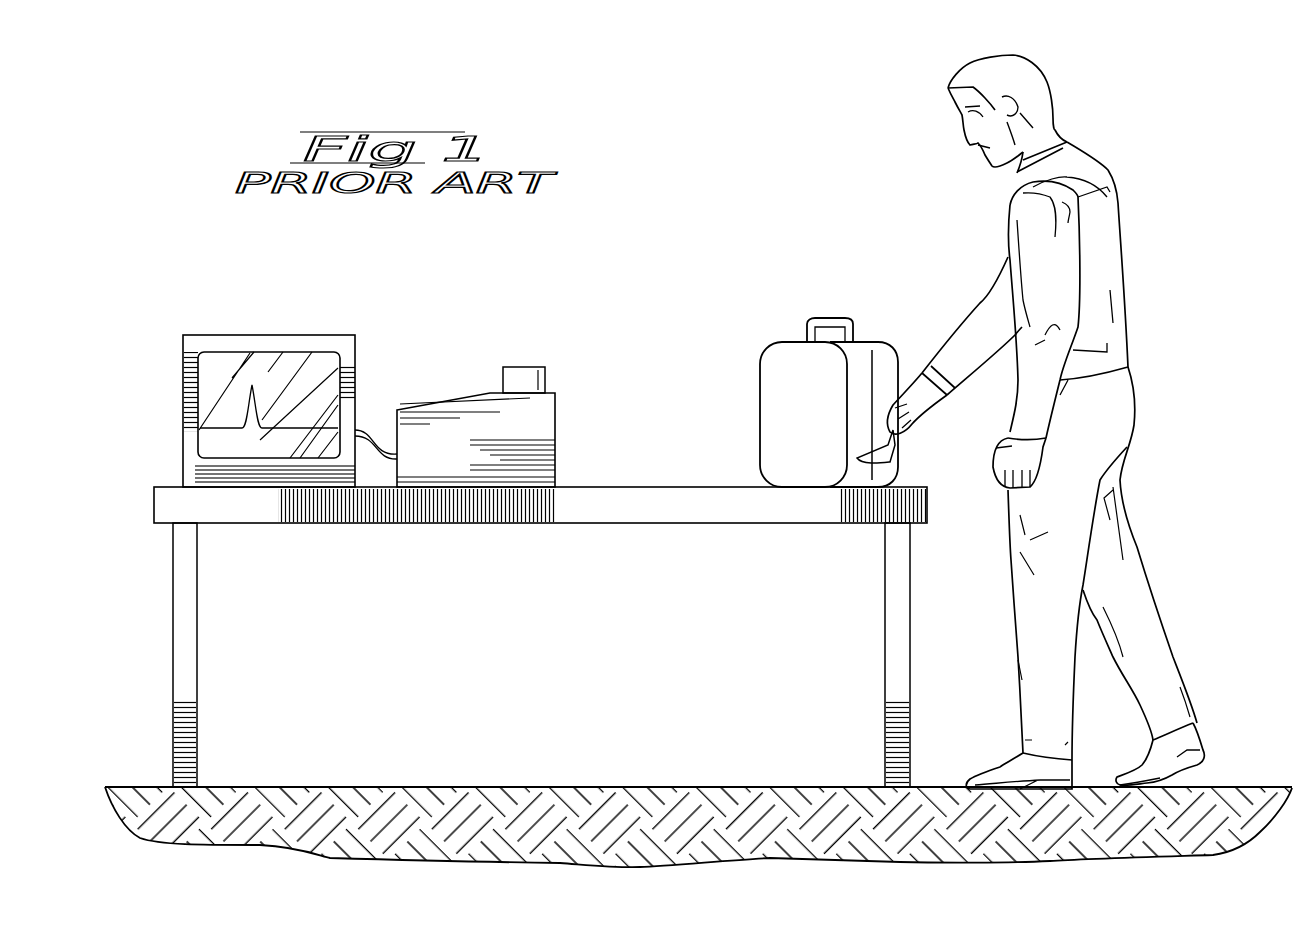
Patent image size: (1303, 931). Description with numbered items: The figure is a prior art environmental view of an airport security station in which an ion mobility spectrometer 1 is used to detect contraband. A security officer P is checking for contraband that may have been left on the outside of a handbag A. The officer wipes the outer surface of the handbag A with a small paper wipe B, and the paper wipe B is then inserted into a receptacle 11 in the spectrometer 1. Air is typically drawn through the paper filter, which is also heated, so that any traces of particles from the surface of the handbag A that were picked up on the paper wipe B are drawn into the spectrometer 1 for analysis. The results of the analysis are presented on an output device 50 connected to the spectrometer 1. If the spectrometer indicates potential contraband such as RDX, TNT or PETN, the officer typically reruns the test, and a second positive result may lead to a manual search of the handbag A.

The ion mobility spectrometer 1 is at (478, 299).
The receptacle 11 is at (523, 365).
The output device 50 is at (183, 384).
The handbag A is at (782, 413).
The paper wipe B is at (882, 457).
The security officer P is at (1113, 170).